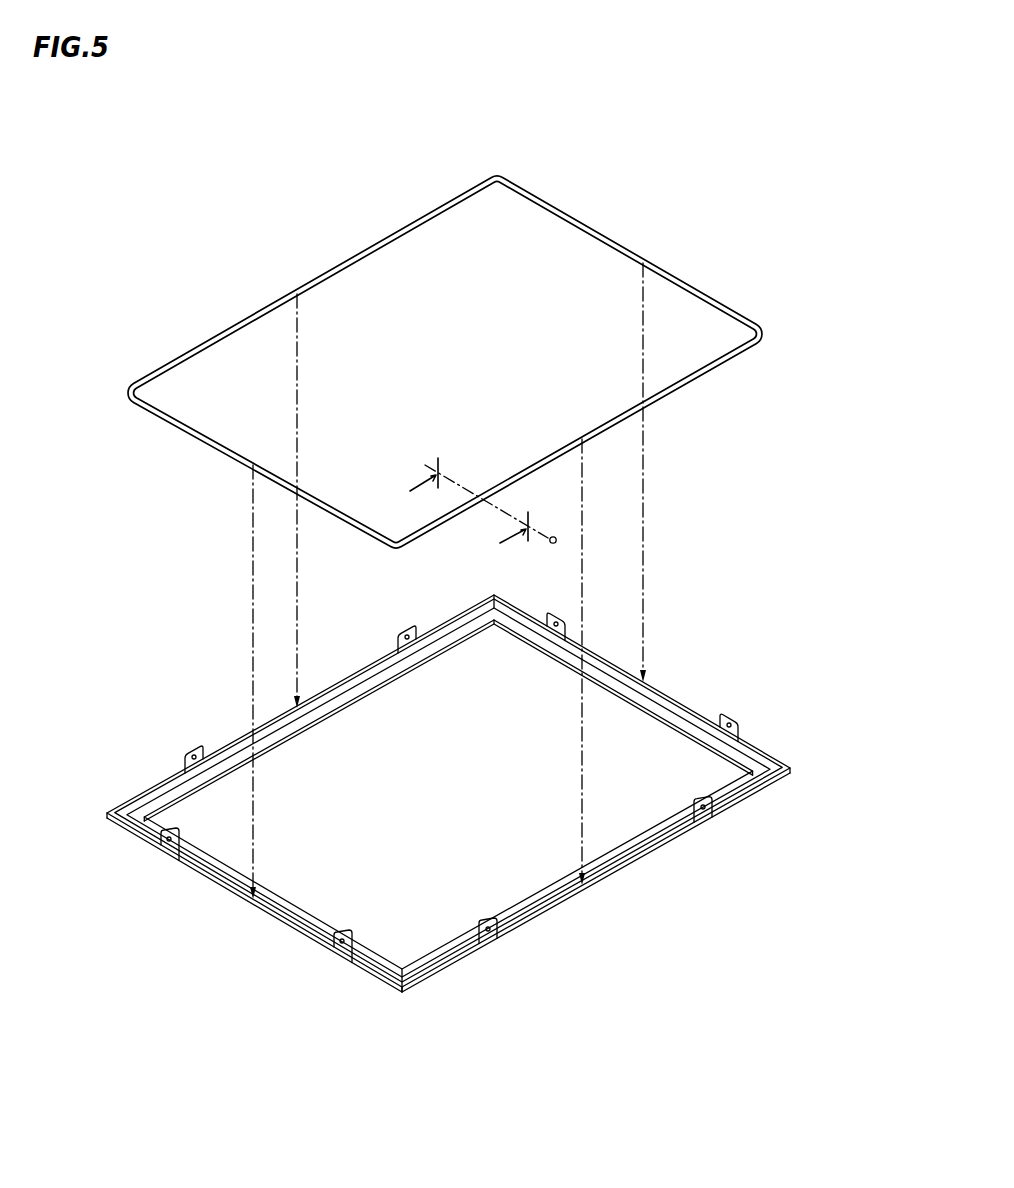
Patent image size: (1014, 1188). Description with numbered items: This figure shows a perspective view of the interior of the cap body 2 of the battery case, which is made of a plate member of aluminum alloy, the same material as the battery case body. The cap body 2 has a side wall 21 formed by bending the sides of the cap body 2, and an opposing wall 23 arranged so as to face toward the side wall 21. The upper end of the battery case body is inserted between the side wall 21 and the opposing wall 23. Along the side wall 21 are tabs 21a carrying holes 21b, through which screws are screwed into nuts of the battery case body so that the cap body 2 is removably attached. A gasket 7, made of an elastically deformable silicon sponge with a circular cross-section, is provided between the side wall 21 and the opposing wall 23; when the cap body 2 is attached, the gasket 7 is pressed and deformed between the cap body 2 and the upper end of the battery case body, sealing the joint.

The gasket 7 is at (637, 253).
The cap body 2 is at (450, 782).
The side wall 21 is at (352, 672).
The tab 21a is at (186, 755).
The hole 21b is at (195, 755).
The opposing wall 23 is at (385, 668).